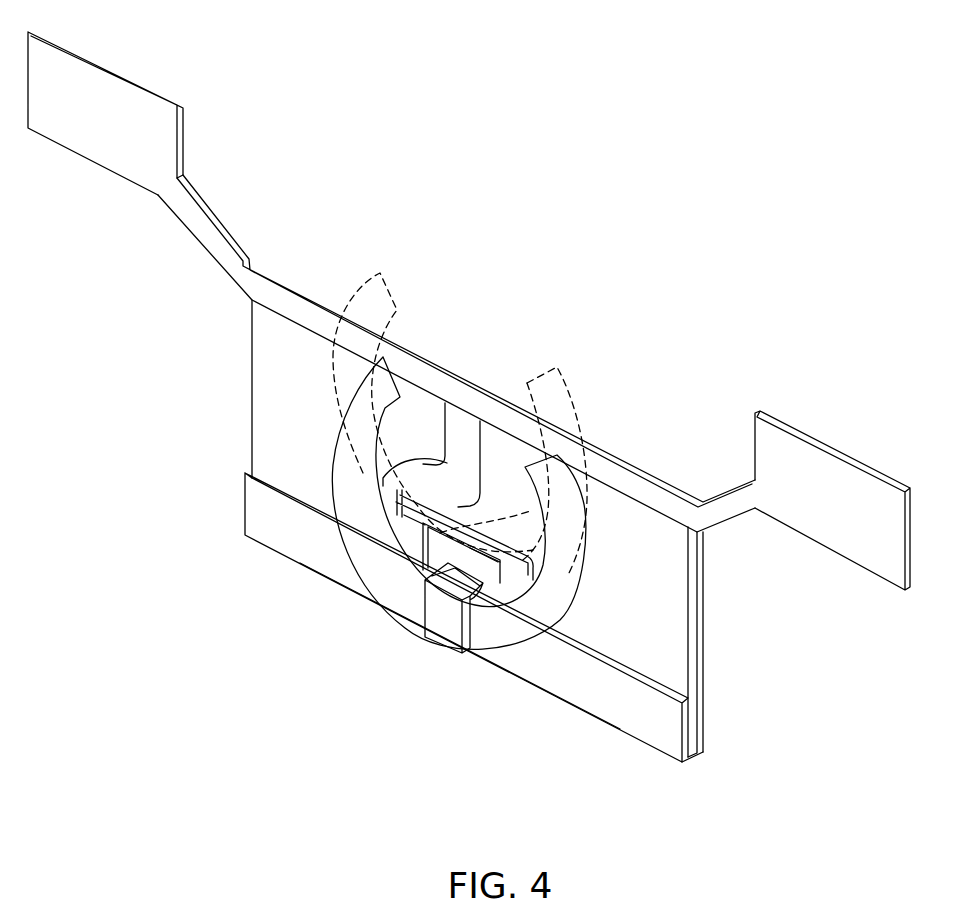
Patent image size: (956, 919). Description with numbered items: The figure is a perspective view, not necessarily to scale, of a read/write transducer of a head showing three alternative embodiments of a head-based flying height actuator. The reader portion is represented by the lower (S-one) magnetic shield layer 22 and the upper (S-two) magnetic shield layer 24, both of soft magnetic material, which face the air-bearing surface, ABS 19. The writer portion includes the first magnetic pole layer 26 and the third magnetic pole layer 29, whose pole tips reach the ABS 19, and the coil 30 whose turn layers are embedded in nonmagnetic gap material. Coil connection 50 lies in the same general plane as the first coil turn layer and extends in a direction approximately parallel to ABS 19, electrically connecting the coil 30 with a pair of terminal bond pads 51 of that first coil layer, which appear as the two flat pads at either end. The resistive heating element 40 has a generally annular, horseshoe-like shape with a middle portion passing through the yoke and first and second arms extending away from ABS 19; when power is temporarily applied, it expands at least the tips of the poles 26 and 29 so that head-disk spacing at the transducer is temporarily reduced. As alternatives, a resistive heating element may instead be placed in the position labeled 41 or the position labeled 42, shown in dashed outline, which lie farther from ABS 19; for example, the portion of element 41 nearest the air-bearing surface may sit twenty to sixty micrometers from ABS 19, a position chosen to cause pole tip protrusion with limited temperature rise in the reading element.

The ABS 19 is at (640, 739).
The lower (S1) magnetic shield layer 22 is at (706, 617).
The upper (S2) magnetic shield layer 24 is at (624, 625).
The first magnetic pole layer 26 is at (557, 672).
The third magnetic pole layer 29 is at (442, 623).
The coil 30 is at (520, 568).
The resistive heating element 40 is at (343, 458).
The resistive heating element (alternative position) 41 is at (561, 393).
The resistive heating element (alternative position) 42 is at (528, 424).
The coil connection 50 is at (452, 363).
The terminal bond pads 51 is at (131, 79).